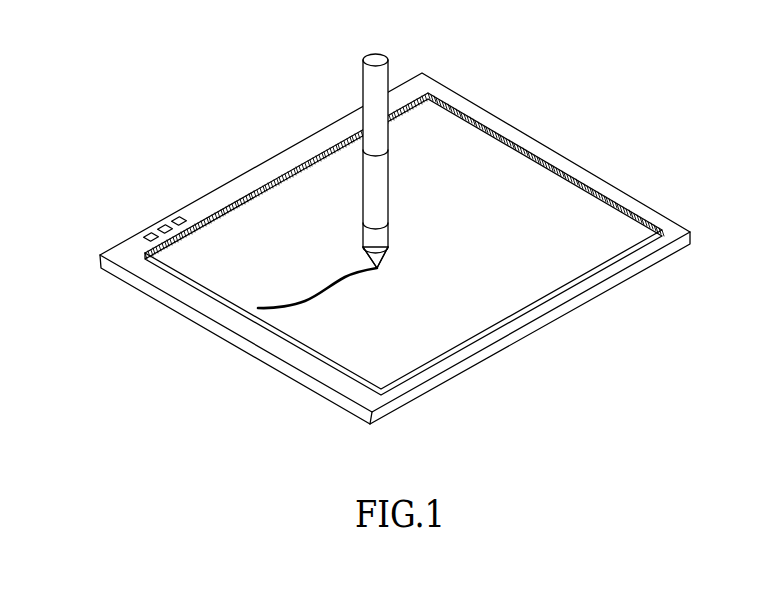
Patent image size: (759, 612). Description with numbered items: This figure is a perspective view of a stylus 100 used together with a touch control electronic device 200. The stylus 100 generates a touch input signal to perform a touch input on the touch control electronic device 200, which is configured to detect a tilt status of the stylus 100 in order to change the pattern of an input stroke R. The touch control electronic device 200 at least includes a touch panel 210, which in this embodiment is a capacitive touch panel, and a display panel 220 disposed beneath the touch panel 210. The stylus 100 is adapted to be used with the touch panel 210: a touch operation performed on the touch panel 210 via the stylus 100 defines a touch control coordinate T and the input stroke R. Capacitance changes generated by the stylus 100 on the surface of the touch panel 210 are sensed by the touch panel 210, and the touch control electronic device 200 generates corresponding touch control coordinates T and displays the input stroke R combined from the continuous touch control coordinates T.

The stylus 100 is at (337, 143).
The touch control electronic device 200 is at (428, 242).
The touch panel 210 is at (549, 211).
The display panel 220 is at (661, 216).
The input stroke R is at (320, 292).
The touch control coordinate T is at (381, 268).